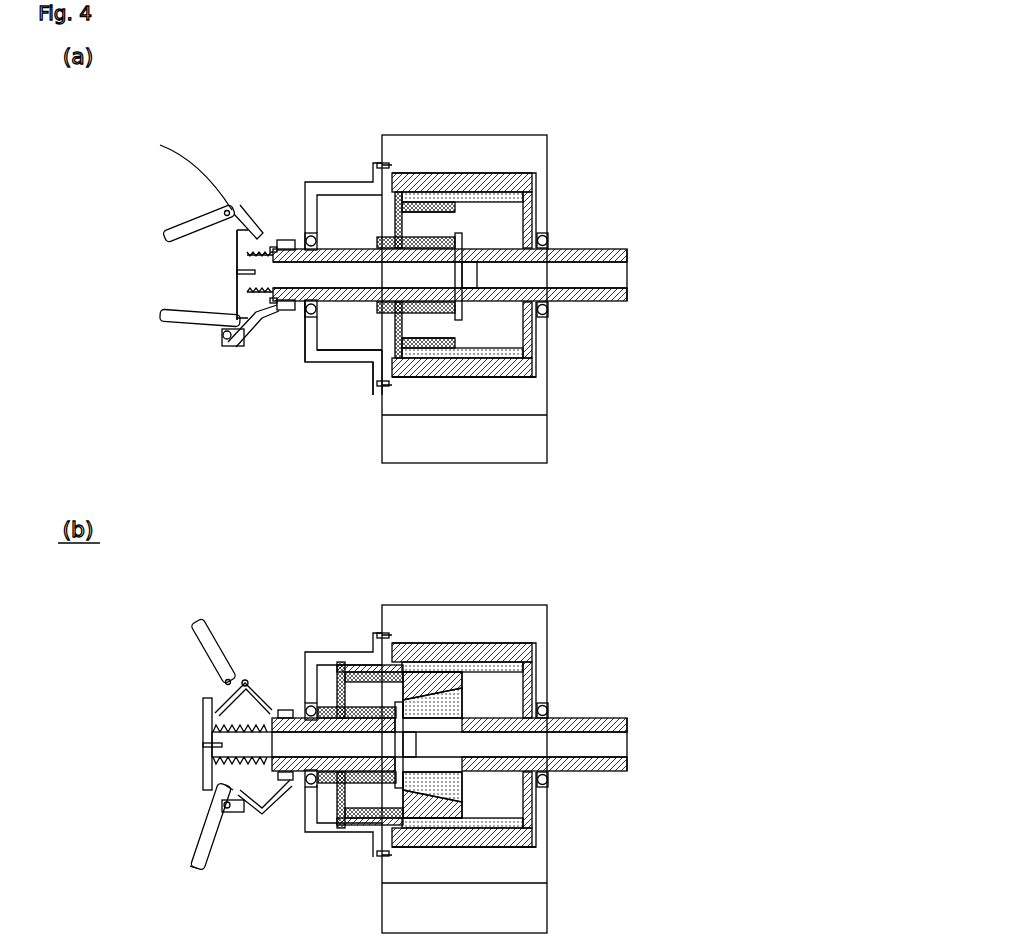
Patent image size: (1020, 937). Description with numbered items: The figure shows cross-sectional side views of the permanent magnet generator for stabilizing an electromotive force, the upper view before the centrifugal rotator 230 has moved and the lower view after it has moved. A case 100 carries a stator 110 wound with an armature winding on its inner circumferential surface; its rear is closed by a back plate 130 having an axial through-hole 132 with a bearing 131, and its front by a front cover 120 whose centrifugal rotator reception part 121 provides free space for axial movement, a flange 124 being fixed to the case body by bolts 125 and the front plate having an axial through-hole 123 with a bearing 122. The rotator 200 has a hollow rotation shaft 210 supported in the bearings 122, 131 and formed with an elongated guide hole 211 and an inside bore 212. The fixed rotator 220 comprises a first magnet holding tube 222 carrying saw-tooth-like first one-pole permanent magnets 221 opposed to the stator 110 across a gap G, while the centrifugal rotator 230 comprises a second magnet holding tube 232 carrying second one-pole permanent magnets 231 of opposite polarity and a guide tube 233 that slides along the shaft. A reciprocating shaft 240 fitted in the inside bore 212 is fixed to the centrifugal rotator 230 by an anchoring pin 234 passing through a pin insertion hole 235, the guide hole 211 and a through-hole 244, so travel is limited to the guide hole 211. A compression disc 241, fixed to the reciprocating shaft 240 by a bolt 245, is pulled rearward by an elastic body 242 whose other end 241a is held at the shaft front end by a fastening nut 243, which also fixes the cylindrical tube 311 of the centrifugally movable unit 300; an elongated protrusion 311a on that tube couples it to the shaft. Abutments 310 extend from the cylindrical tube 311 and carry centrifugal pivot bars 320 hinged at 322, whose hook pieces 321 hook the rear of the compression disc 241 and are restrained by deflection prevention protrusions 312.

The case 100 is at (548, 398).
The stator 110 is at (530, 367).
The front cover 120 is at (188, 390).
The centrifugal rotator reception part 121 is at (297, 363).
The bearing 122 is at (292, 312).
The axial through-hole 123 is at (243, 347).
The flange 124 is at (368, 378).
The bolts 125 is at (372, 390).
The back plate 130 is at (548, 333).
The bearing 131 is at (548, 313).
The axial through-hole 132 is at (597, 297).
The rotator 200 is at (185, 92).
The rotation shaft 210 is at (548, 180).
The guide hole 211 is at (405, 245).
The inside bore 212 is at (602, 273).
The fixed rotator 220 is at (505, 172).
The first one-pole permanent magnets 221 is at (478, 186).
The first magnet holding tube 222 is at (500, 200).
The centrifugal rotator 230 is at (337, 250).
The second one-pole permanent magnets 231 is at (393, 222).
The second magnet holding tube 232 is at (377, 237).
The guide tube 233 is at (330, 250).
The anchoring pin 234 is at (453, 225).
The pin insertion hole 235 is at (533, 212).
The reciprocating shaft 240 is at (290, 240).
The compression disc 241 is at (170, 233).
The other end of elastic body 241a is at (237, 245).
The elastic body 242 is at (205, 222).
The fastening nut 243 is at (222, 210).
The through-hole 244 is at (435, 207).
The bolt 245 is at (203, 745).
The centrifugally movable unit 300 is at (95, 233).
The abutments 310 is at (255, 307).
The cylindrical tube 311 is at (268, 303).
The elongated protrusion 311a is at (285, 240).
The deflection prevention protrusions 312 is at (230, 212).
The centrifugal pivot bars 320 is at (160, 316).
The hook piece 321 is at (230, 325).
The hinge 322 is at (215, 338).
The gap G is at (487, 345).